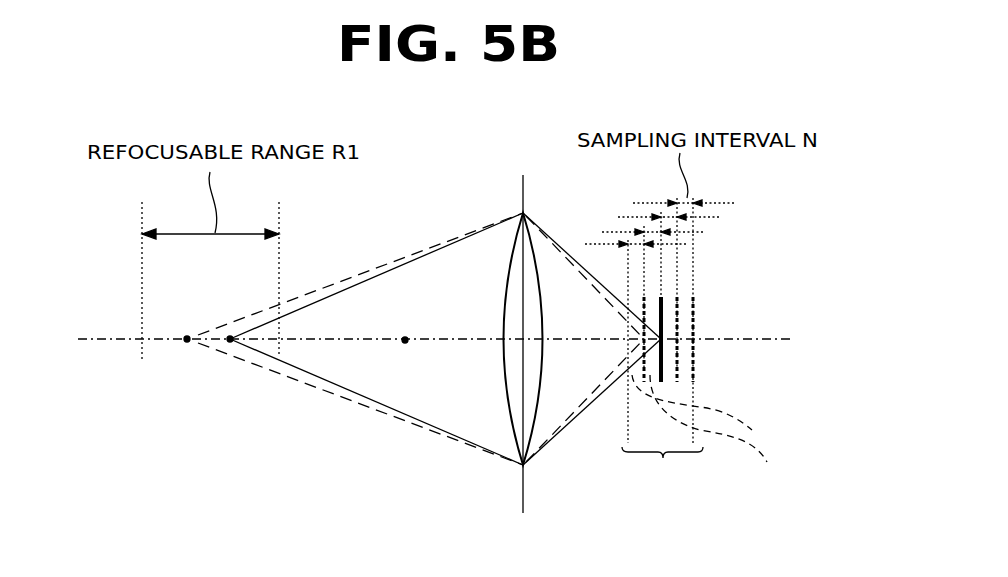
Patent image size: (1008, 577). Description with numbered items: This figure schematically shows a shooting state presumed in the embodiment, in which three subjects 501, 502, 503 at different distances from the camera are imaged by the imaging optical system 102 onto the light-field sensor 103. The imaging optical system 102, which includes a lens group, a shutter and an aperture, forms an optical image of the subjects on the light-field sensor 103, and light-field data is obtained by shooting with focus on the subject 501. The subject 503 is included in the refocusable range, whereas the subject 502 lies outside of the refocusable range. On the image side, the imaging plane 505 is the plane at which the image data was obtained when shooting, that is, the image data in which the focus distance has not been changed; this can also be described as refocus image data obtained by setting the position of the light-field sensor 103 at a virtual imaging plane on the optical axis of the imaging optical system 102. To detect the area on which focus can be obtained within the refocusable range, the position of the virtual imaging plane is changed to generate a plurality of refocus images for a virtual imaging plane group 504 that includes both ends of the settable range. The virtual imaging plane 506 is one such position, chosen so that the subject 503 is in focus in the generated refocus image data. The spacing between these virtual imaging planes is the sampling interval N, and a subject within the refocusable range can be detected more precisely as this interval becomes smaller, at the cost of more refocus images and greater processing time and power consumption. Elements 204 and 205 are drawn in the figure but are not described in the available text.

The imaging optical system 102 is at (525, 466).
The light-field sensor 103 is at (662, 360).
The virtual imaging plane 204 is at (628, 277).
The pixel 205 is at (693, 280).
The subject 501 is at (230, 341).
The subject 502 is at (405, 338).
The subject 503 is at (187, 341).
The virtual imaging plane group 504 is at (663, 460).
The imaging plane 505 is at (721, 410).
The virtual imaging plane 506 is at (725, 433).